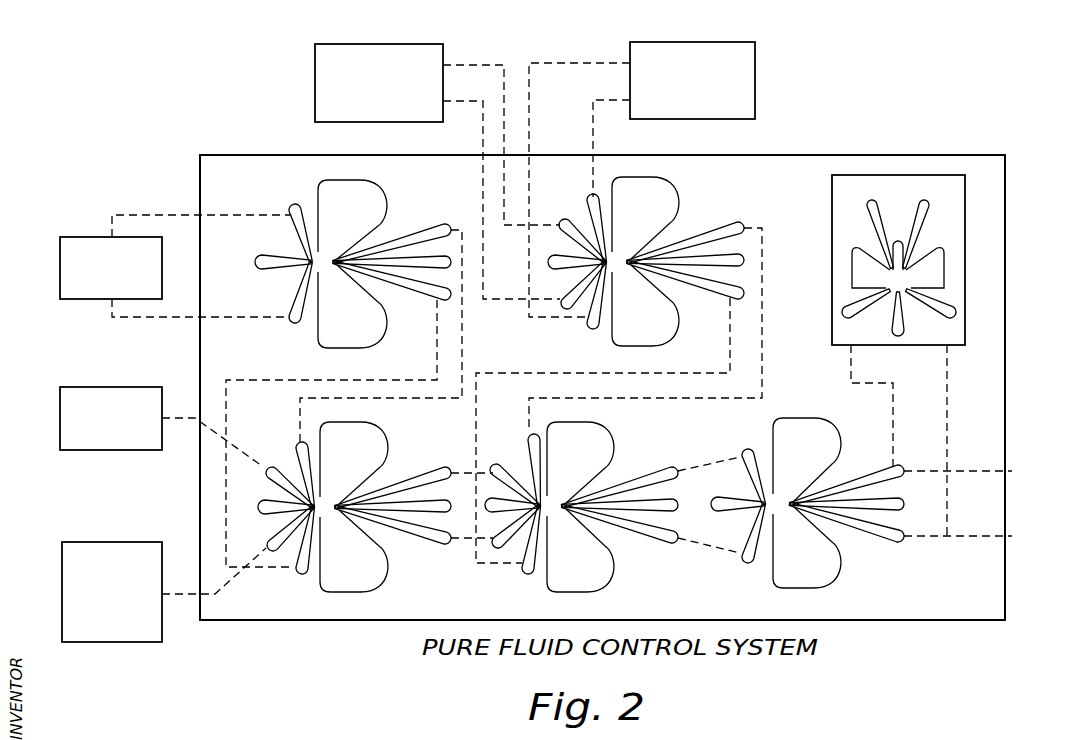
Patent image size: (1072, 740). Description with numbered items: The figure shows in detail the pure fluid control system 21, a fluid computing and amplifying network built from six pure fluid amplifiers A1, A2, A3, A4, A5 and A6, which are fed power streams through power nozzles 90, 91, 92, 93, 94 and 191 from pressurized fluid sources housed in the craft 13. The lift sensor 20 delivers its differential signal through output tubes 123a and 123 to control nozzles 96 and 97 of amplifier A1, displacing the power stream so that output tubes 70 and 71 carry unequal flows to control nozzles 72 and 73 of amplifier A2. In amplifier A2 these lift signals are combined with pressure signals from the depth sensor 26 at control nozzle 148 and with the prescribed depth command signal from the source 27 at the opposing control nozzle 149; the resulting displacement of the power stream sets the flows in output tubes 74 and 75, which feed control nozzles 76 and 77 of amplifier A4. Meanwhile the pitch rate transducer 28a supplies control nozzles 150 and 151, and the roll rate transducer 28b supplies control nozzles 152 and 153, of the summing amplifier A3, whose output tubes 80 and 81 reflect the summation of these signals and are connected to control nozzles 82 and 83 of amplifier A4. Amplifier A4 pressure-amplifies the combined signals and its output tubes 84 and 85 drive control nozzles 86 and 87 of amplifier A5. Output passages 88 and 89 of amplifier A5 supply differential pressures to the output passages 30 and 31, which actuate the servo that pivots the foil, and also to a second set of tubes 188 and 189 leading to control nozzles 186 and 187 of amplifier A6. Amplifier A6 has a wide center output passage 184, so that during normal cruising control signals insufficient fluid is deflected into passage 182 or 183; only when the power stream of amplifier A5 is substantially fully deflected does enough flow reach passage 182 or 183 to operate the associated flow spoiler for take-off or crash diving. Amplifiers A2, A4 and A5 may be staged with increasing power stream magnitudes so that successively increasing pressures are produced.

The craft 13 is at (290, 112).
The lift sensor 20 is at (58, 302).
The pure fluid control system 21 is at (984, 146).
The depth sensor 26 is at (74, 452).
The depth command signal source 27 is at (80, 642).
The pitch rate transducer 28a is at (425, 44).
The roll rate transducer 28b is at (728, 42).
The output passage 30 is at (962, 478).
The output passage 31 is at (962, 542).
The output tube 70 is at (452, 232).
The output tube 71 is at (437, 320).
The control nozzle 72 is at (300, 446).
The control nozzle 73 is at (300, 576).
The output tube 74 is at (442, 468).
The output tube 75 is at (436, 547).
The control nozzle 76 is at (497, 458).
The control nozzle 77 is at (500, 550).
The output tube 80 is at (745, 224).
The output tube 81 is at (744, 298).
The control nozzle 82 is at (537, 437).
The control nozzle 83 is at (528, 580).
The output tube 84 is at (668, 465).
The output tube 85 is at (660, 545).
The control nozzle 86 is at (750, 448).
The control nozzle 87 is at (750, 565).
The output passage 88 is at (888, 470).
The output passage 89 is at (882, 545).
The power nozzle 90 is at (265, 270).
The power nozzle 91 is at (266, 513).
The power nozzle 92 is at (557, 270).
The power nozzle 93 is at (490, 500).
The power nozzle 94 is at (725, 512).
The control nozzle 96 is at (293, 200).
The control nozzle 97 is at (292, 323).
The output tube 123 is at (118, 320).
The output tube 123a is at (120, 212).
The control nozzle 148 is at (250, 468).
The control nozzle 149 is at (270, 546).
The control nozzle 150 is at (572, 220).
The control nozzle 151 is at (566, 312).
The control nozzle 152 is at (590, 200).
The control nozzle 153 is at (592, 333).
The output passage 182 is at (924, 200).
The output passage 183 is at (872, 200).
The center output passage 184 is at (898, 240).
The control nozzle 186 is at (846, 312).
The control nozzle 187 is at (957, 315).
The tube 188 is at (893, 408).
The tube 189 is at (949, 386).
The power nozzle 191 is at (895, 334).
The pure fluid amplifier A1 is at (390, 215).
The pure fluid amplifier A2 is at (396, 470).
The summing amplifier A3 is at (690, 212).
The pure fluid amplifier A4 is at (622, 458).
The pure fluid amplifier A5 is at (845, 445).
The pure fluid amplifier A6 is at (965, 236).